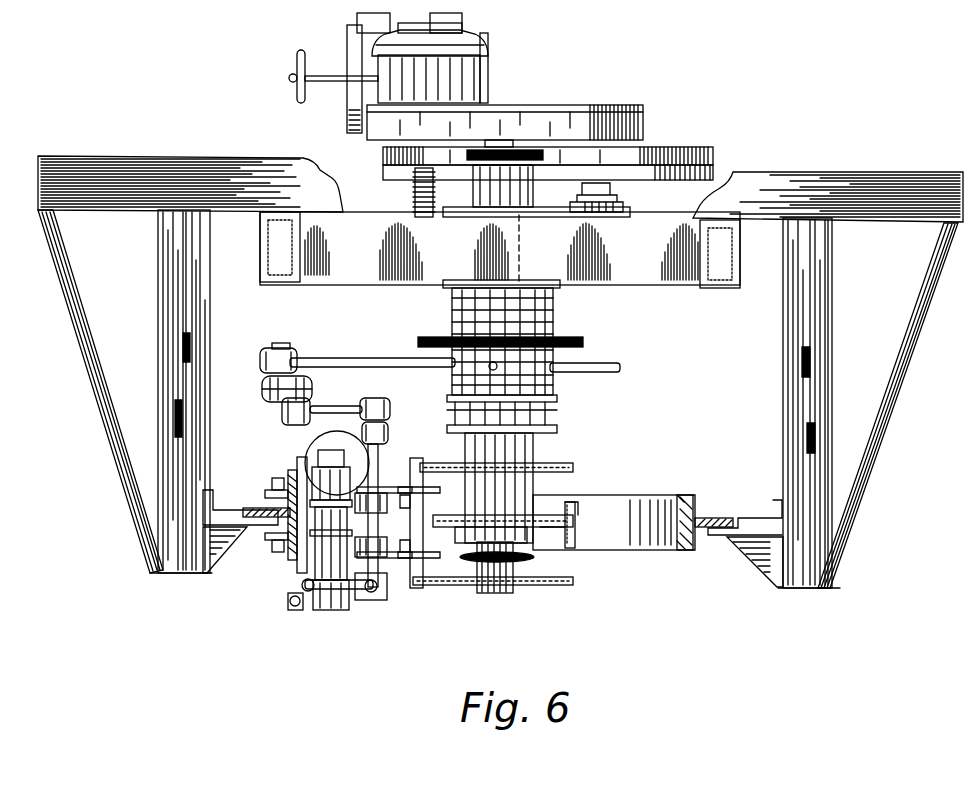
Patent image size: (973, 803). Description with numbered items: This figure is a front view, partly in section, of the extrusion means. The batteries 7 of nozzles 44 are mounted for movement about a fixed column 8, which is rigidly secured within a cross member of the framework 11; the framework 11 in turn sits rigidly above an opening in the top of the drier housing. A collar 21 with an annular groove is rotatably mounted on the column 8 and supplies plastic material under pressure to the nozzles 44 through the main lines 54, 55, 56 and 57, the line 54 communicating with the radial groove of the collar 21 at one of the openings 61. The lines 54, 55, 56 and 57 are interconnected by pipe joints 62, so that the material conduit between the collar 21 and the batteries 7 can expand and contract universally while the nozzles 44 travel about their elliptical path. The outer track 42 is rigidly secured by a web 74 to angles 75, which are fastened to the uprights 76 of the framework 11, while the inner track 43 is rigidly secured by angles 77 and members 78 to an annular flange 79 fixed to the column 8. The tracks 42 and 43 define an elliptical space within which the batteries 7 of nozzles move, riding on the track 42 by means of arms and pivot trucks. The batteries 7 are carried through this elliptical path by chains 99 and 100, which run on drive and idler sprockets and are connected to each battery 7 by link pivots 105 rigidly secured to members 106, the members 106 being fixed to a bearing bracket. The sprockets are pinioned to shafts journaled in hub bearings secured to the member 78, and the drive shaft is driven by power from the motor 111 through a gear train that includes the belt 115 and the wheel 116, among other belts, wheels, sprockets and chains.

The battery of nozzles 7 is at (308, 606).
The fixed column 8 is at (533, 458).
The framework 11 is at (115, 156).
The collar 21 is at (555, 340).
The track 42 is at (693, 497).
The track 43 is at (577, 540).
The nozzle 44 is at (332, 595).
The main line 54 is at (310, 358).
The main line 55 is at (262, 389).
The main line 56 is at (320, 406).
The main line 57 is at (380, 455).
The opening 61 is at (497, 366).
The joint 62 is at (290, 348).
The web 74 is at (258, 505).
The angle 75 is at (222, 508).
The upright 76 is at (165, 412).
The angle 77 is at (567, 505).
The member 78 is at (475, 518).
The annular flange 79 is at (548, 530).
The chain 99 is at (575, 468).
The chain 100 is at (555, 585).
The link pivot 105 is at (420, 465).
The member 106 is at (395, 590).
The motor 111 is at (450, 80).
The belt 115 is at (515, 120).
The wheel 116 is at (620, 108).